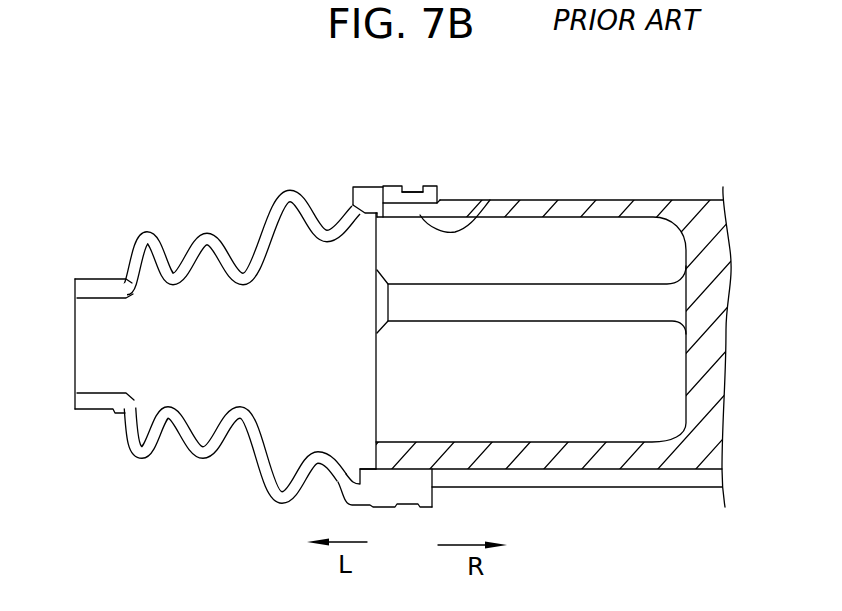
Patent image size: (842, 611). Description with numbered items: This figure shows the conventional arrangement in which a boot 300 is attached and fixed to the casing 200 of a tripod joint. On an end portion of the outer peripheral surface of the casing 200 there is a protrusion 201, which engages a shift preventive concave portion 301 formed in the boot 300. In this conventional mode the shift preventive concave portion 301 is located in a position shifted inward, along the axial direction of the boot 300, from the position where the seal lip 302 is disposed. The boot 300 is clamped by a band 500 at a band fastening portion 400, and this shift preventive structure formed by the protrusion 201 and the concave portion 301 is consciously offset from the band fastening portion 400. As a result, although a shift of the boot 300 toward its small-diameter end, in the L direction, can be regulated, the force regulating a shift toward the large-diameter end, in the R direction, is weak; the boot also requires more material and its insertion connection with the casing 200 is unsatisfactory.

The casing 200 is at (670, 200).
The protrusion 201 is at (381, 186).
The boot 300 is at (190, 228).
The shift preventive concave portion 301 is at (344, 187).
The seal lip 302 is at (490, 200).
The band fastening portion 400 is at (413, 176).
The band 500 is at (418, 187).